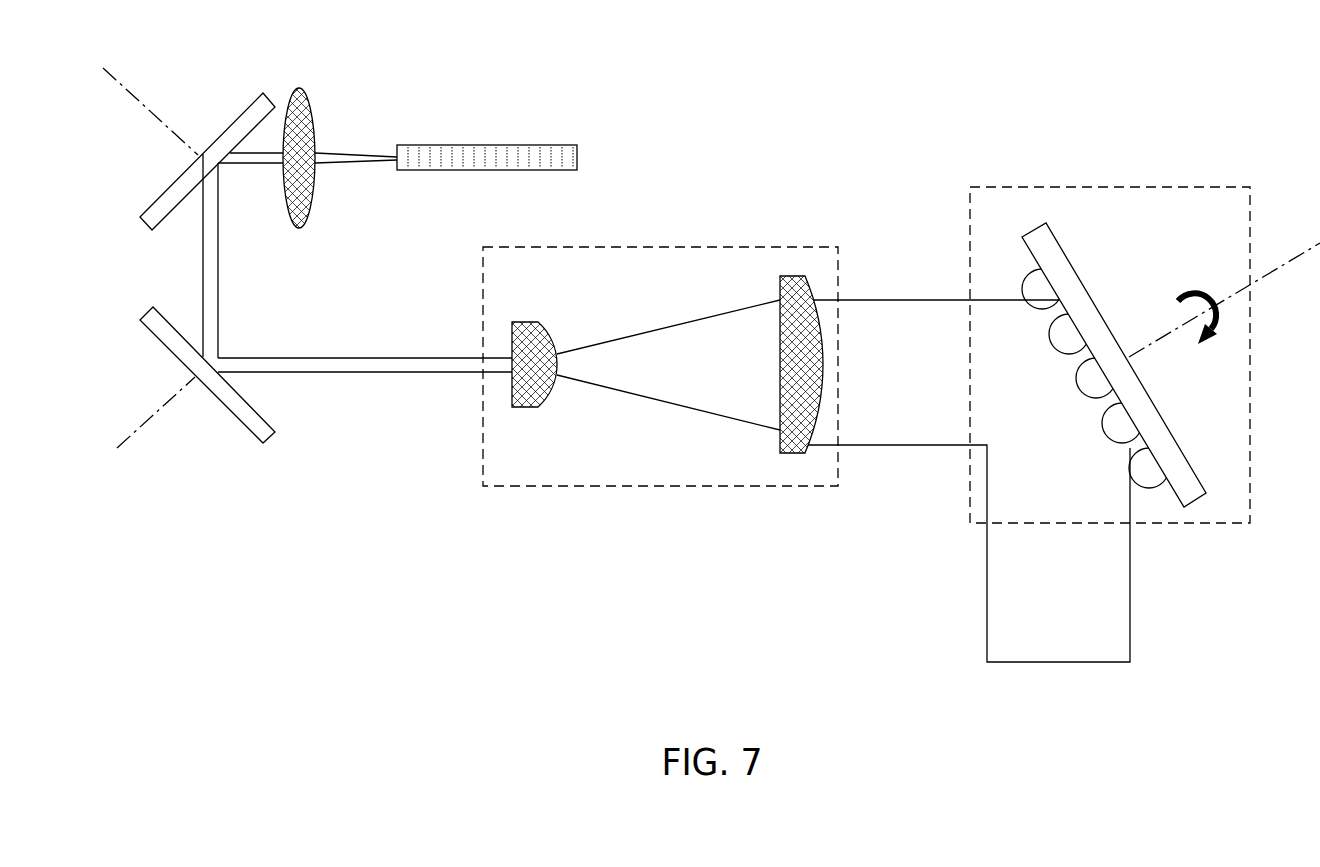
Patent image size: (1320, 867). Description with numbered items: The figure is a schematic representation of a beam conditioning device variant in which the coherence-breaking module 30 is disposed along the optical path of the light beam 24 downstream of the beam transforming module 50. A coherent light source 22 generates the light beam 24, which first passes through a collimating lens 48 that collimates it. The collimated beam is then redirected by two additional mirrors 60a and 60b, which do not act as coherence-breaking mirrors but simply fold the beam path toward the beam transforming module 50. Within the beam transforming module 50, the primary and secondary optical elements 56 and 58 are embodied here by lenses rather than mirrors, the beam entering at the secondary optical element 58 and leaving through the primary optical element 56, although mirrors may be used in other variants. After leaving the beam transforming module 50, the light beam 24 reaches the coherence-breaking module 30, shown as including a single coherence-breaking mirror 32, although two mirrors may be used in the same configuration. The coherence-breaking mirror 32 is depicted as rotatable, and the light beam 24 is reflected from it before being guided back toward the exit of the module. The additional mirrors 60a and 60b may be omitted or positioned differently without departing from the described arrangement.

The coherent light source 22 is at (486, 145).
The light beam 24 is at (350, 165).
The coherence-breaking module 30 is at (1043, 187).
The coherence-breaking mirror 32 is at (1055, 254).
The collimating lens 48 is at (298, 87).
The beam transforming module 50 is at (693, 247).
The primary optical element 56 is at (780, 440).
The secondary optical element 58 is at (530, 322).
The additional mirror 60a is at (226, 127).
The additional mirror 60b is at (231, 413).